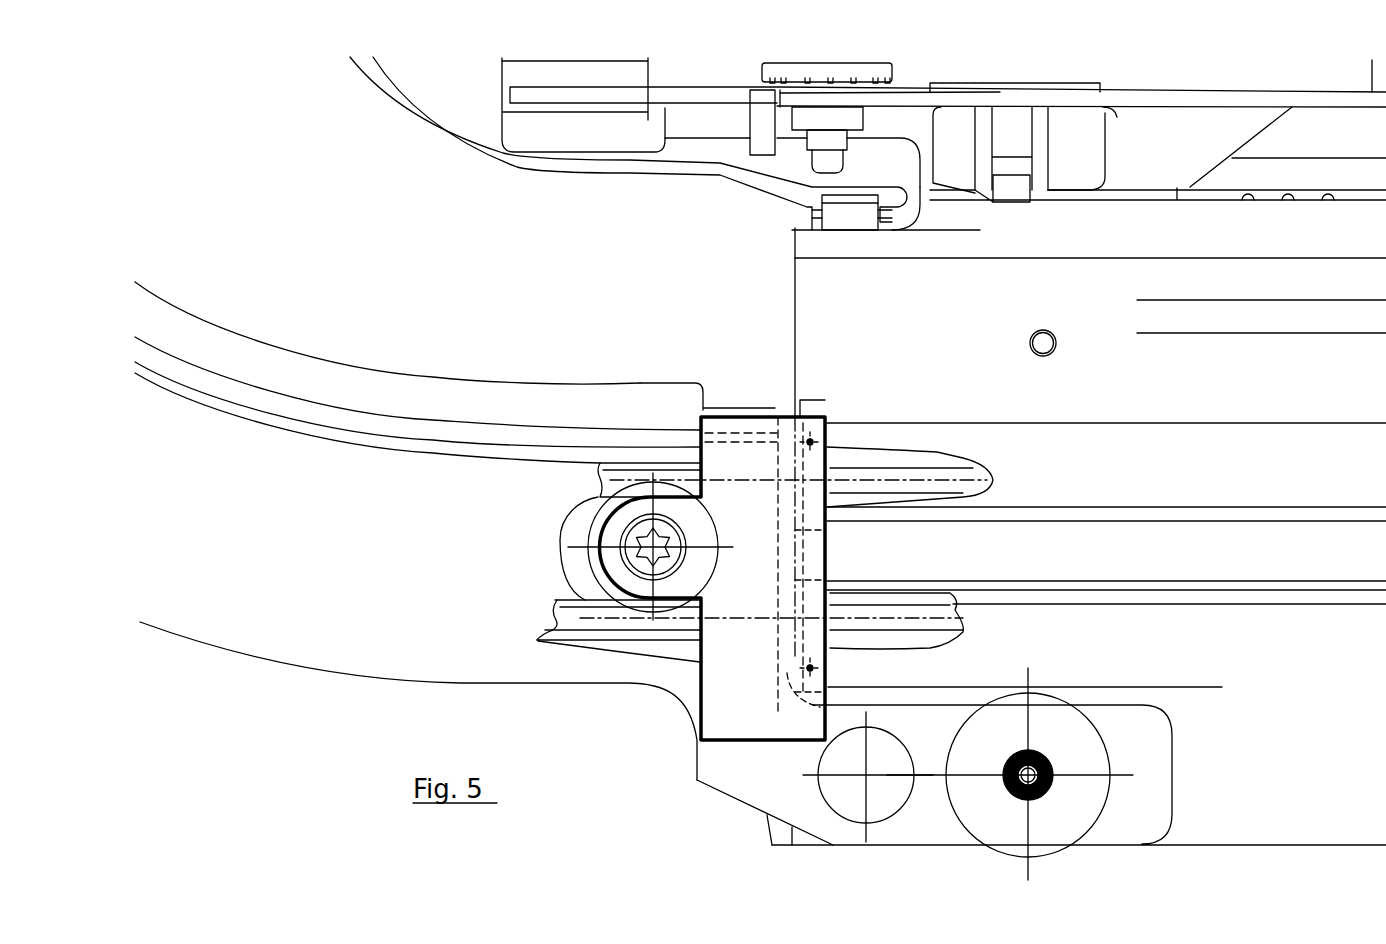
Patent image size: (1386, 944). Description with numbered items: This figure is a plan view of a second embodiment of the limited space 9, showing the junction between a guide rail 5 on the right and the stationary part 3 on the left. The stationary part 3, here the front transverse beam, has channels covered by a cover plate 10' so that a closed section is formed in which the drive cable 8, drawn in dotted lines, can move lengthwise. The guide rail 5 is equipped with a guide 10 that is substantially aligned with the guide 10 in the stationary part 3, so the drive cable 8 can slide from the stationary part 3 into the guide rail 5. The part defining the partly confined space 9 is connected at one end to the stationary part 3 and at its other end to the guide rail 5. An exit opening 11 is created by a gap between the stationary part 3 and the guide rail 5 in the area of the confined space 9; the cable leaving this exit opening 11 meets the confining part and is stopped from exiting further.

The stationary part 3 is at (255, 372).
The guide rail 5 is at (893, 462).
The drive cable 8 is at (787, 625).
The limited space 9 is at (713, 687).
The guide 10 is at (837, 462).
The cover plate 10' is at (227, 676).
The exit opening 11 is at (787, 503).